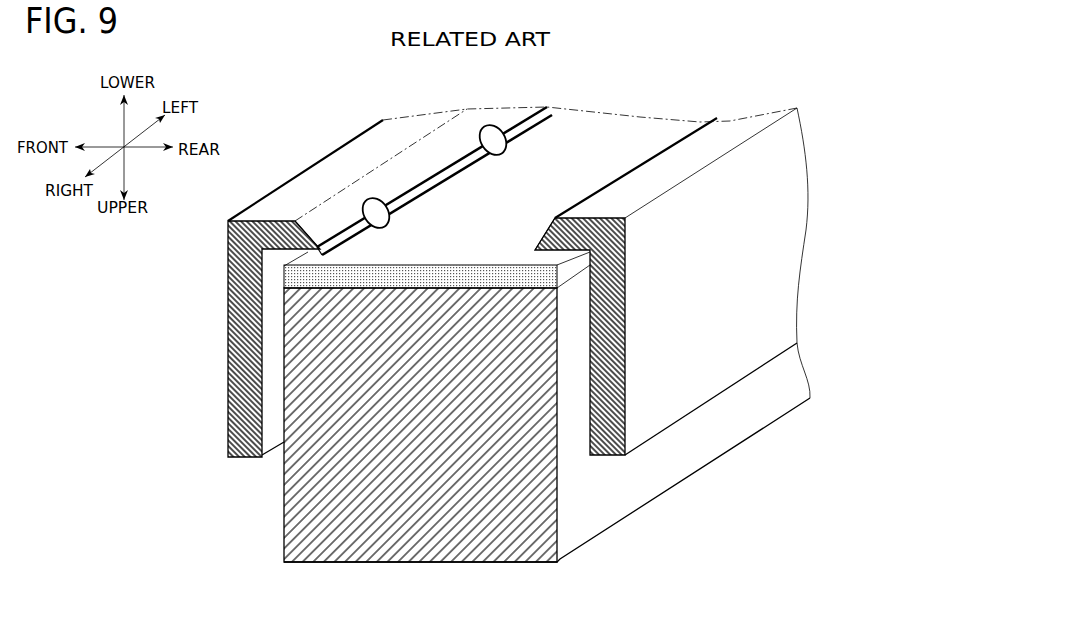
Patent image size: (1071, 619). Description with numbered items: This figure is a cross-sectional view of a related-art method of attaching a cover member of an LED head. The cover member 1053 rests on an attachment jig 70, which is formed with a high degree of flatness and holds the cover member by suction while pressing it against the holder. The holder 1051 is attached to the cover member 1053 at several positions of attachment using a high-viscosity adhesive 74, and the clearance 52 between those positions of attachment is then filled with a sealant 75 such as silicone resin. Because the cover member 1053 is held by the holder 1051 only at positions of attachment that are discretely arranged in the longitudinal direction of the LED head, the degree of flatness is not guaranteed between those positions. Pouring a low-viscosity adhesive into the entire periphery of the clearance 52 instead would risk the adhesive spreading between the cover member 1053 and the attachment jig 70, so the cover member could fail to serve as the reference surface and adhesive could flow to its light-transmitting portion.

The clearance 52 is at (227, 238).
The attachment jig 70 is at (284, 513).
The high-viscosity adhesive 74 is at (375, 198).
The sealant 75 is at (348, 233).
The holder 1051 is at (227, 375).
The cover member 1053 is at (600, 127).